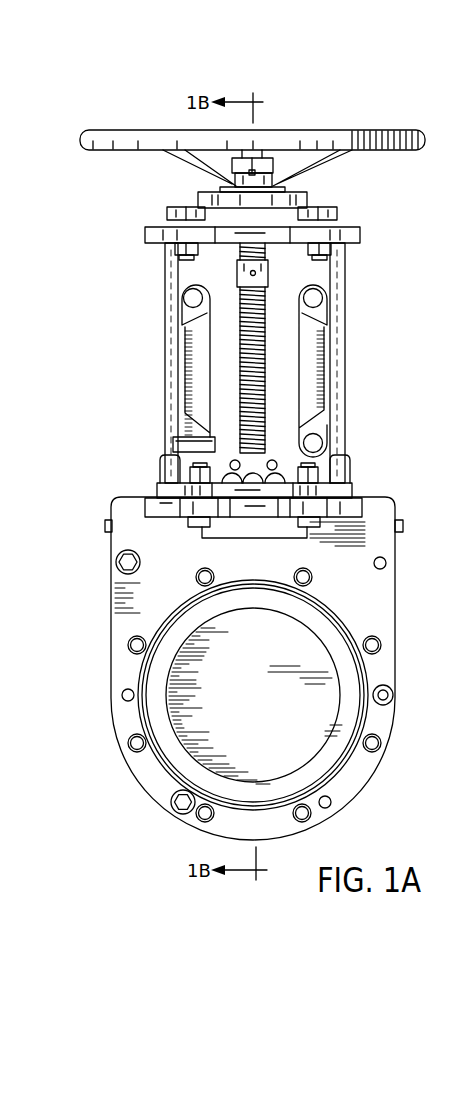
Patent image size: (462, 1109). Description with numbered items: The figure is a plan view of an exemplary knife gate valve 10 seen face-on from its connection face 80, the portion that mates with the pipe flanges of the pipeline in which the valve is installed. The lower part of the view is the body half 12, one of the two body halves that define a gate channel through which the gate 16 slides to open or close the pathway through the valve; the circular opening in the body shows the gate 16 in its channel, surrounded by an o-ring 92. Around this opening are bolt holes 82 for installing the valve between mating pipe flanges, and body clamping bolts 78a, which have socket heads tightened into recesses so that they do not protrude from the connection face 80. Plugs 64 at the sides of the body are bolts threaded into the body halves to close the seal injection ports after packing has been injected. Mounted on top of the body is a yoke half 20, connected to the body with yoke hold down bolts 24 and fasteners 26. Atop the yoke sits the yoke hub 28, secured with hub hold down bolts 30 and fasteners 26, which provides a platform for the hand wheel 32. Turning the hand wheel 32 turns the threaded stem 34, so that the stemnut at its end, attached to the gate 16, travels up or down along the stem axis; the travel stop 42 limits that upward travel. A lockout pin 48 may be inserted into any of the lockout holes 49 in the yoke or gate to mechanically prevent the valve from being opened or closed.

The knife gate valve 10 is at (395, 280).
The body half 12 is at (119, 629).
The gate 16 is at (246, 724).
The yoke half 20 is at (148, 338).
The yoke hold down bolts 24 is at (196, 530).
The fasteners 26 is at (177, 249).
The yoke hub 28 is at (168, 218).
The hub hold down bolts 30 is at (328, 208).
The hand wheel 32 is at (107, 151).
The threaded stem 34 is at (262, 358).
The travel stop 42 is at (268, 277).
The lockout pin 48 is at (175, 442).
The lockout holes 49 is at (190, 298).
The plugs 64 is at (104, 522).
The body clamping bolts 78a is at (394, 693).
The connection face 80 is at (150, 781).
The bolt holes 82 is at (381, 645).
The o-rings 92 is at (342, 770).